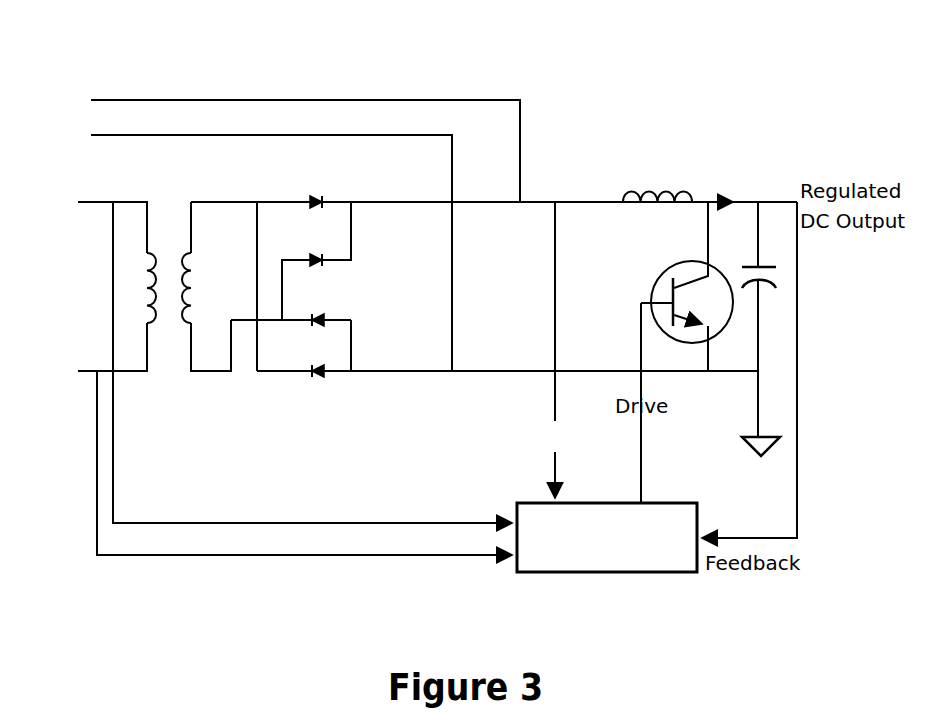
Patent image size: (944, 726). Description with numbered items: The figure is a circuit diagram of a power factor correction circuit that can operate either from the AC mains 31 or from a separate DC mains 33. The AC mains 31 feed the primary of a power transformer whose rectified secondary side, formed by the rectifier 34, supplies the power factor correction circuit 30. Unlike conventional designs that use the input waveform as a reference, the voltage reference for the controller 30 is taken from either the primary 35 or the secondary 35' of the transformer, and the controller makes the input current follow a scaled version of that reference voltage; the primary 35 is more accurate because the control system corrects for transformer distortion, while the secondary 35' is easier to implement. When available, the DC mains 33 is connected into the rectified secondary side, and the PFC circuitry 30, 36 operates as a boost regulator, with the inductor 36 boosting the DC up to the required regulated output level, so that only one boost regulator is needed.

The DC mains 33 is at (53, 90).
The AC mains 31 is at (48, 273).
The rectifier diodes 34 is at (340, 373).
The primary 35 is at (531, 350).
The secondary 35' is at (400, 585).
The PFC circuitry 36 is at (631, 190).
The power factor correction circuit 30 is at (560, 574).